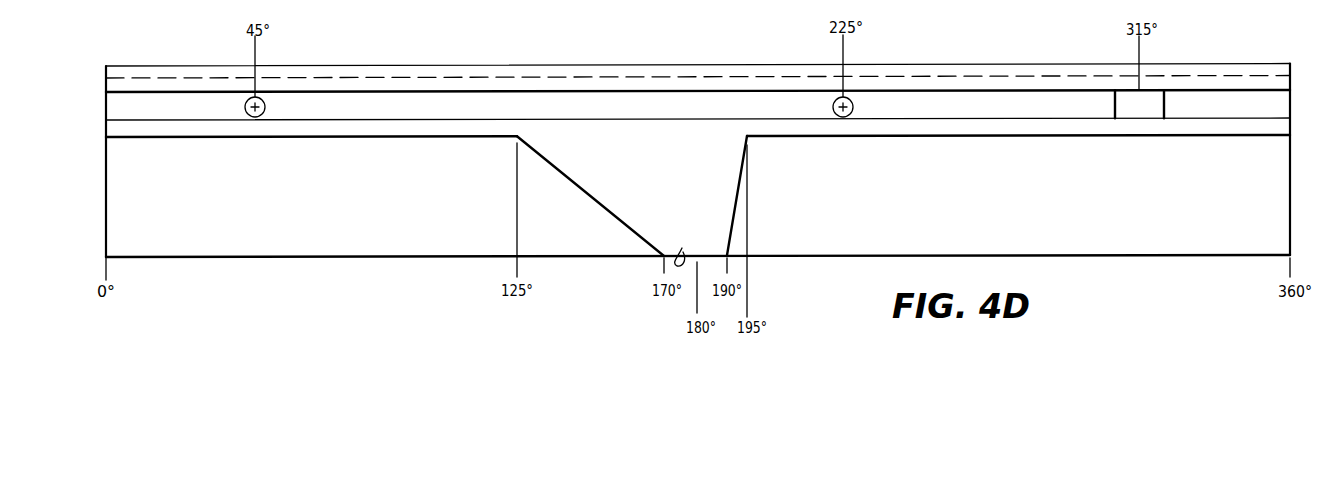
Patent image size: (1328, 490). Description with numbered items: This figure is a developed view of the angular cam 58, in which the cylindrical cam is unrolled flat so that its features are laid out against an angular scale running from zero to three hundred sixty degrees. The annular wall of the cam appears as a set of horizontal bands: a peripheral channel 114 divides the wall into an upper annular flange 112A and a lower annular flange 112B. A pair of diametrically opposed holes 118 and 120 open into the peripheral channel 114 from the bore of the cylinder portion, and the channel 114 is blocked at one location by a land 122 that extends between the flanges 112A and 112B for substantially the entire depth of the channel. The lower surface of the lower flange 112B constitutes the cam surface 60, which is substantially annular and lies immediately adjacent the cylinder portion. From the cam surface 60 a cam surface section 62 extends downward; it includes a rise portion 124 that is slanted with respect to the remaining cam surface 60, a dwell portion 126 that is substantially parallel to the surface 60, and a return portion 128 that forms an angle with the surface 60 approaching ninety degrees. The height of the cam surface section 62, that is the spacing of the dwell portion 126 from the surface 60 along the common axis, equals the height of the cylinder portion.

The angular cam 58 is at (126, 205).
The cam surface 60 is at (404, 138).
The cam surface section 62 is at (712, 176).
The upper annular flange 112A is at (182, 82).
The lower annular flange 112B is at (140, 130).
The peripheral channel 114 is at (120, 105).
The hole 118 is at (853, 105).
The hole 120 is at (266, 106).
The land 122 is at (1142, 107).
The rise portion 124 is at (591, 197).
The dwell portion 126 is at (682, 248).
The return portion 128 is at (734, 210).